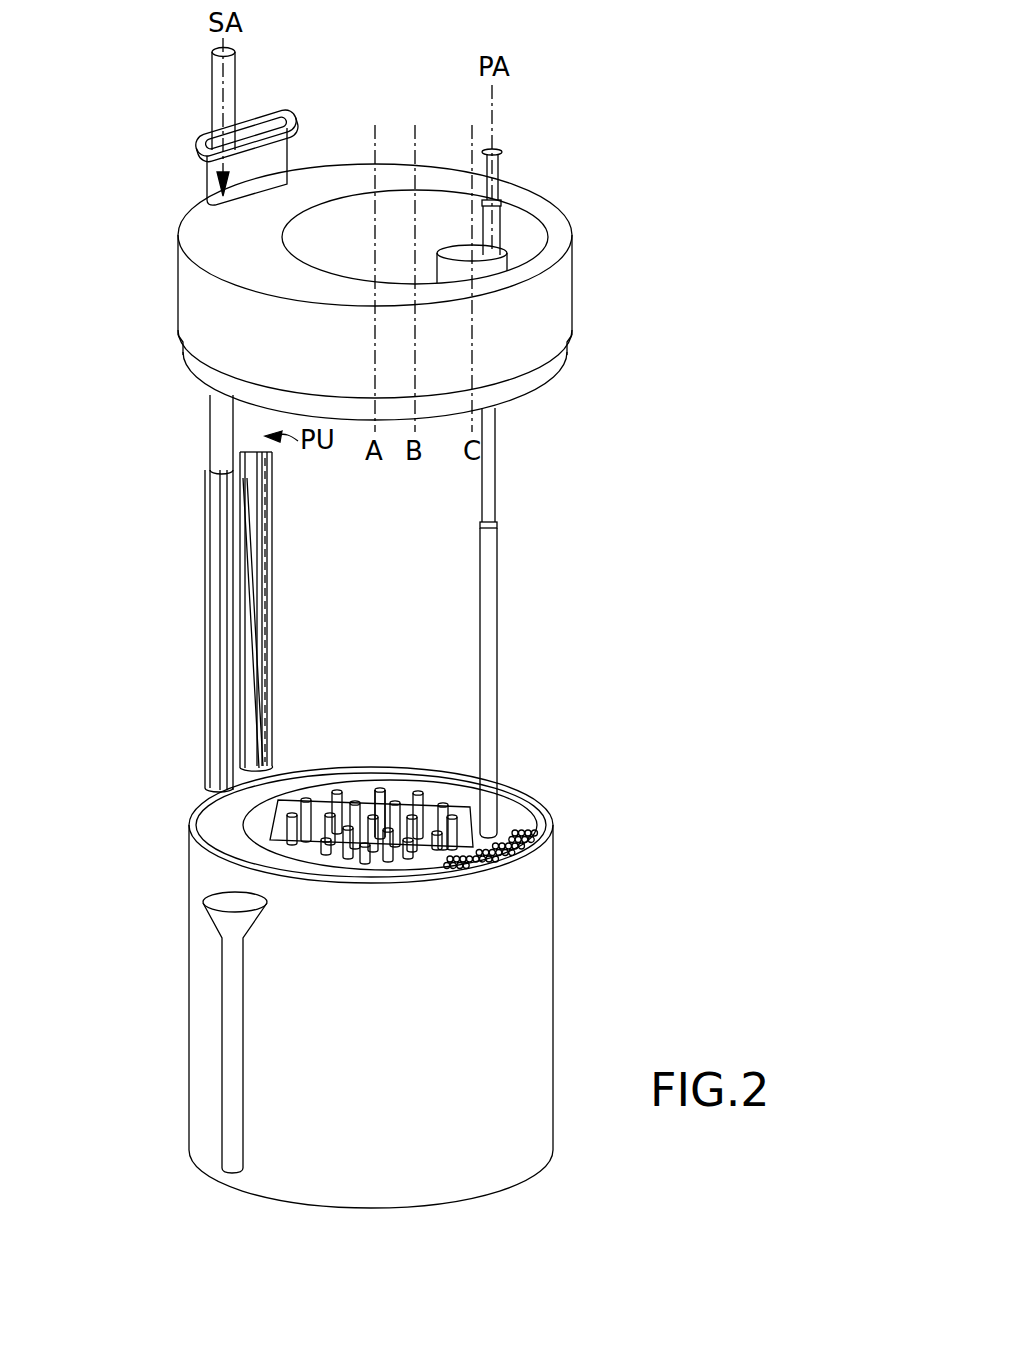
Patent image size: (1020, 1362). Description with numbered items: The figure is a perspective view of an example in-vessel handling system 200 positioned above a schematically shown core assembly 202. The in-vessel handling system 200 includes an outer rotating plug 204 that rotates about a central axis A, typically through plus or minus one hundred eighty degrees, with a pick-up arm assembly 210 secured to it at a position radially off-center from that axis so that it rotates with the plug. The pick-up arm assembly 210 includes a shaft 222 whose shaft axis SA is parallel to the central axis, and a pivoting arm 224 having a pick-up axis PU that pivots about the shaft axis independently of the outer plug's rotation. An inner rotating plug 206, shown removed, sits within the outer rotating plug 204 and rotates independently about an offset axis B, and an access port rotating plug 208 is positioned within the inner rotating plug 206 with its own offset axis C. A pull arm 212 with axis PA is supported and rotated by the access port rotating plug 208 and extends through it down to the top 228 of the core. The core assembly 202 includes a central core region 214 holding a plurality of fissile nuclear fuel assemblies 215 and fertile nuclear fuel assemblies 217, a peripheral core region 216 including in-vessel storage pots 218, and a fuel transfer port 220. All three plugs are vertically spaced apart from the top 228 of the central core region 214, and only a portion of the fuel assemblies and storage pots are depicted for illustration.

The in-vessel handling system 200 is at (618, 394).
The core assembly 202 is at (575, 945).
The outer rotating plug 204 is at (200, 235).
The inner rotating plug 206 is at (522, 224).
The access port rotating plug 208 is at (447, 254).
The pull arm 212 is at (500, 150).
The pick-up arm assembly 210 is at (292, 108).
The shaft 222 is at (211, 436).
The pivoting arm 224 is at (258, 450).
The central core region 214 is at (424, 786).
The fissile nuclear fuel assemblies 215 is at (325, 794).
The fertile nuclear fuel assemblies 217 is at (379, 792).
The peripheral core region 216 is at (517, 811).
The top of the central core region 228 is at (505, 784).
The in-vessel storage pots 218 is at (549, 841).
The fuel transfer port 220 is at (232, 975).